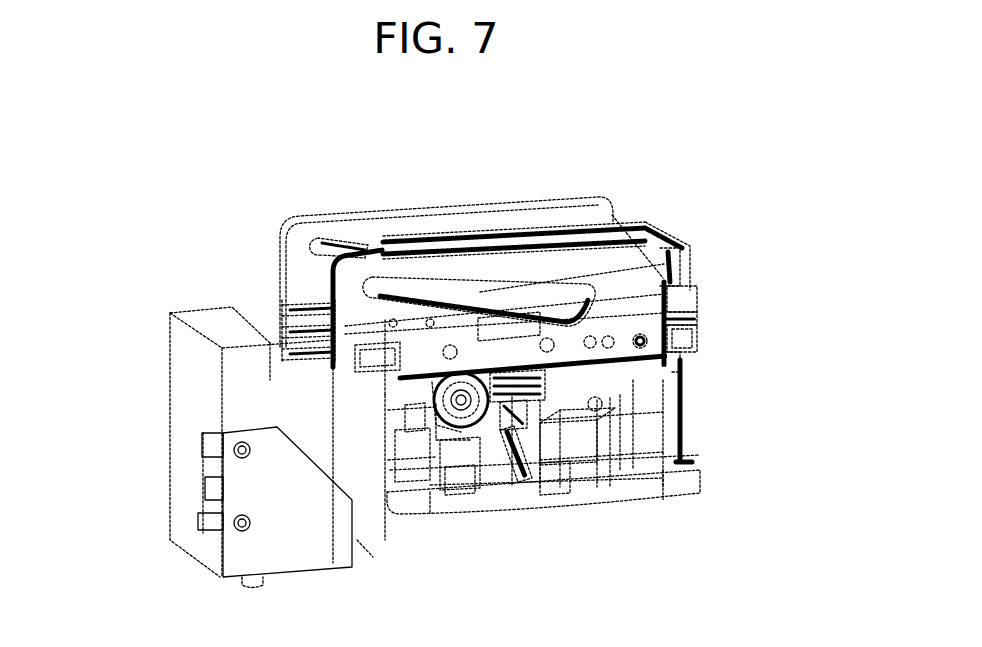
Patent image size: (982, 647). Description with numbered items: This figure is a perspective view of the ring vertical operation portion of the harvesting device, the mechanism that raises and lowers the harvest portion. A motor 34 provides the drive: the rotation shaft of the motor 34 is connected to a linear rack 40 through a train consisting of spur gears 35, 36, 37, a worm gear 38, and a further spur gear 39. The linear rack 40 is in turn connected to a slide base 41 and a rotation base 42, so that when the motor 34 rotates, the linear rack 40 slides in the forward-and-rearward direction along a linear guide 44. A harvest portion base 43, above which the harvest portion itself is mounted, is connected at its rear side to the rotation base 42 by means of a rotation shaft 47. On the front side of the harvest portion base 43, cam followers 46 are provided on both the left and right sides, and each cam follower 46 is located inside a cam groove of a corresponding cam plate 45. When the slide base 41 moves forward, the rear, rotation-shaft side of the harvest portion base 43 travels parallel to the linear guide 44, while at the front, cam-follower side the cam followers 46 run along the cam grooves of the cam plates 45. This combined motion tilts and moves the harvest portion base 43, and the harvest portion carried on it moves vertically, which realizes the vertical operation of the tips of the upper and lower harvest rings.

The motor 34 is at (578, 458).
The spur gear 35 is at (513, 440).
The spur gear 36 is at (495, 417).
The spur gear 37 is at (495, 398).
The worm gear 38 is at (420, 400).
The spur gear 39 is at (430, 388).
The linear rack 40 is at (678, 335).
The slide base 41 is at (698, 315).
The rotation base 42 is at (688, 295).
The harvest portion base 43 is at (658, 235).
The linear guide 44 is at (318, 333).
The cam plate 45 is at (347, 282).
The cam follower 46 is at (590, 290).
The rotation shaft 47 is at (665, 275).